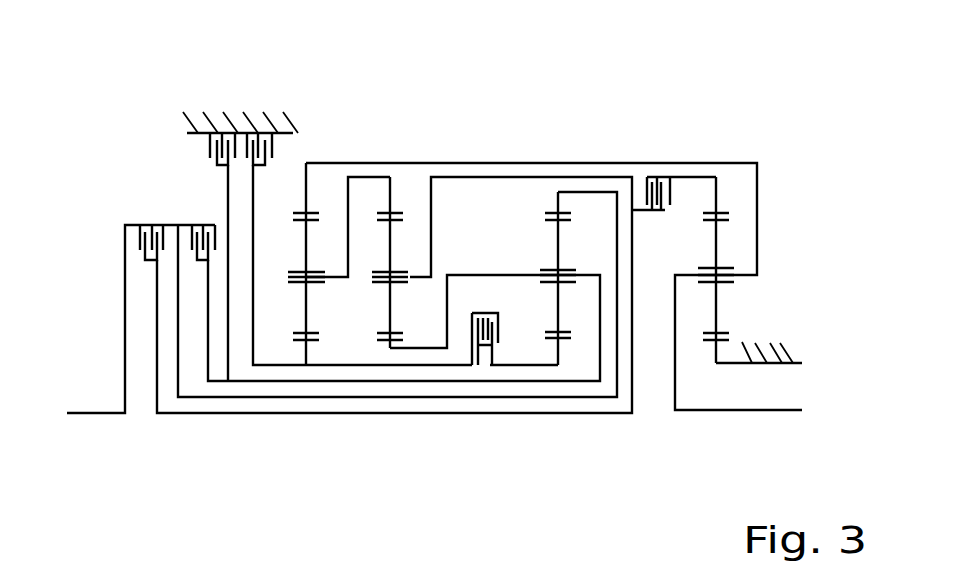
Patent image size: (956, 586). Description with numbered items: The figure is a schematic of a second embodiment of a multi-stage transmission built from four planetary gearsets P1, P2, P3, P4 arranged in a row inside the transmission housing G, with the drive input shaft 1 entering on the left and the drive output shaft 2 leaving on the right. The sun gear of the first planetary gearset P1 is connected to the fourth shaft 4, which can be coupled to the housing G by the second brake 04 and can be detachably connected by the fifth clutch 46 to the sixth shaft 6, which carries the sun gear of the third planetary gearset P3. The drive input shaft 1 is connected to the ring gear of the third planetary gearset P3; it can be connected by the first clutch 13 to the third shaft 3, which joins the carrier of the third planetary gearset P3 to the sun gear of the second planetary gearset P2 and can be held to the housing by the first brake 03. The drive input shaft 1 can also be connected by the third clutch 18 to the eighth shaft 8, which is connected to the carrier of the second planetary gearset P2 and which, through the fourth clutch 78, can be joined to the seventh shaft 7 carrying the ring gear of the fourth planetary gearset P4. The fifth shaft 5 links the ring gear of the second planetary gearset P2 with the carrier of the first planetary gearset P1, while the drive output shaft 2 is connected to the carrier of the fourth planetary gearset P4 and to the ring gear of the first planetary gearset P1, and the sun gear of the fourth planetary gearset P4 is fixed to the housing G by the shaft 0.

The drive input shaft 1 is at (92, 416).
The drive output shaft 2 is at (323, 162).
The shaft 0 is at (733, 367).
The transmission housing G is at (228, 115).
The third shaft 3 is at (410, 352).
The fourth shaft 4 is at (303, 353).
The fifth shaft 5 is at (387, 193).
The sixth shaft 6 is at (557, 360).
The seventh shaft 7 is at (718, 187).
The eighth shaft 8 is at (418, 277).
The third clutch 18 is at (137, 243).
The first clutch 13 is at (185, 227).
The first brake 03 is at (213, 153).
The second brake 04 is at (283, 112).
The fifth clutch 46 is at (473, 333).
The fourth clutch 78 is at (645, 190).
The first planetary gearset P1 is at (306, 152).
The second planetary gearset P2 is at (390, 152).
The third planetary gearset P3 is at (558, 152).
The fourth planetary gearset P4 is at (716, 149).